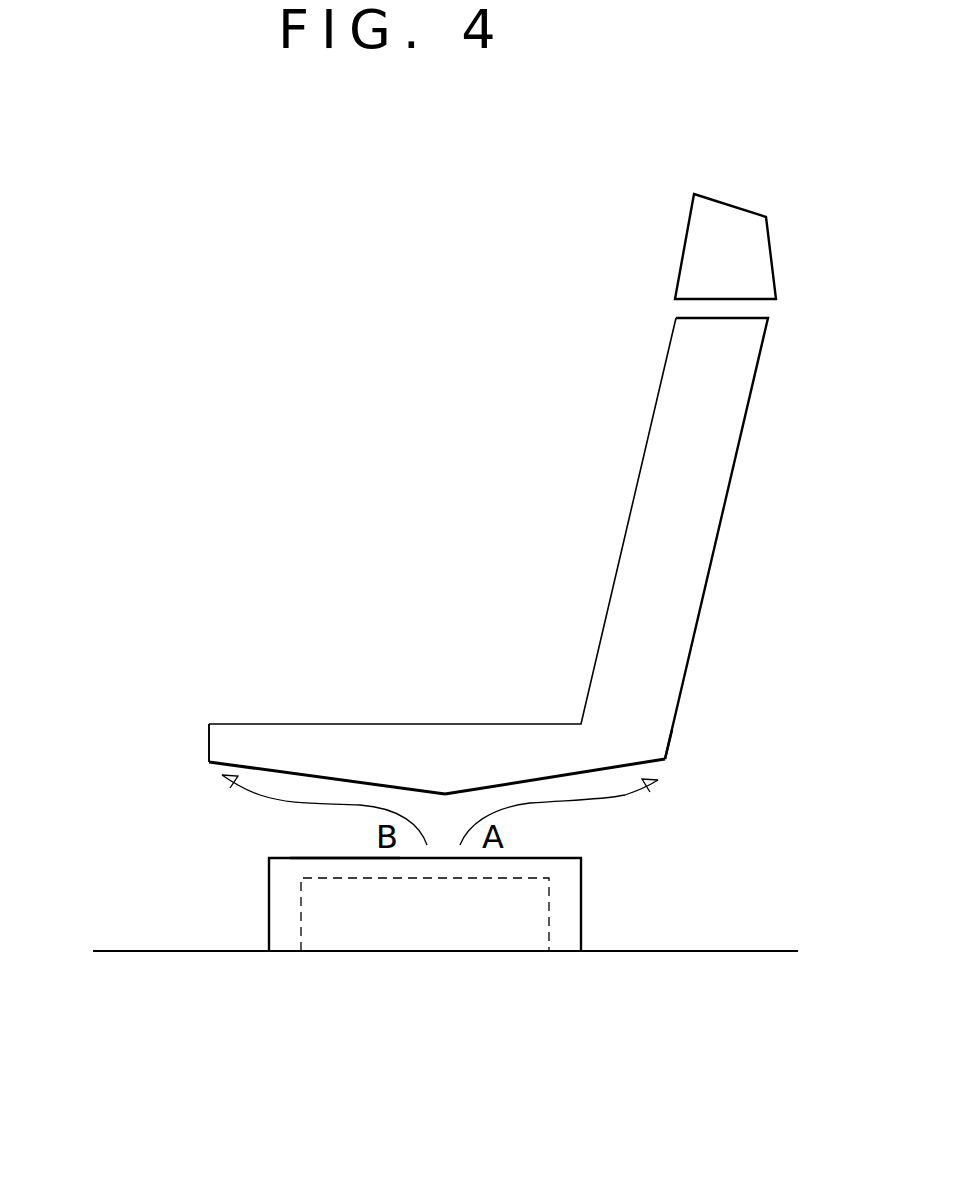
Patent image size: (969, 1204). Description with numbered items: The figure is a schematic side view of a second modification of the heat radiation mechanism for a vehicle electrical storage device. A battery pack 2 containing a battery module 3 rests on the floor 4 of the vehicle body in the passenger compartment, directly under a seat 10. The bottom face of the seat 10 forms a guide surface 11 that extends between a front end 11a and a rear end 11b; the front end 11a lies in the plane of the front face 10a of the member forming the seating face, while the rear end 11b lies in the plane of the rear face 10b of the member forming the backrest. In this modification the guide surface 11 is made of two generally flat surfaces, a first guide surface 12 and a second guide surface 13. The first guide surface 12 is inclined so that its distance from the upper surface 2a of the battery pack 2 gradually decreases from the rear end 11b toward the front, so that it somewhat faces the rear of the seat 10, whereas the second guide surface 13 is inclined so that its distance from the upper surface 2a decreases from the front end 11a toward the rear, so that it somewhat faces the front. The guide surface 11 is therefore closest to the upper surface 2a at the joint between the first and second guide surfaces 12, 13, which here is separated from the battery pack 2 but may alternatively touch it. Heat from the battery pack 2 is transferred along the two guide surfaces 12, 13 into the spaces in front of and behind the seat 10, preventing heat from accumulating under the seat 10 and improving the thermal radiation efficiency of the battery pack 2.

The battery pack 2 is at (268, 905).
The upper surface of the battery pack 2a is at (338, 858).
The battery module 3 is at (549, 916).
The floor 4 is at (628, 952).
The seat 10 is at (648, 506).
The front face 10a is at (208, 737).
The rear face 10b is at (681, 698).
The guide surface 11 is at (453, 636).
The front end of the guide surface 11a is at (207, 765).
The rear end of the guide surface 11b is at (670, 765).
The first guide surface 12 is at (530, 773).
The second guide surface 13 is at (293, 772).